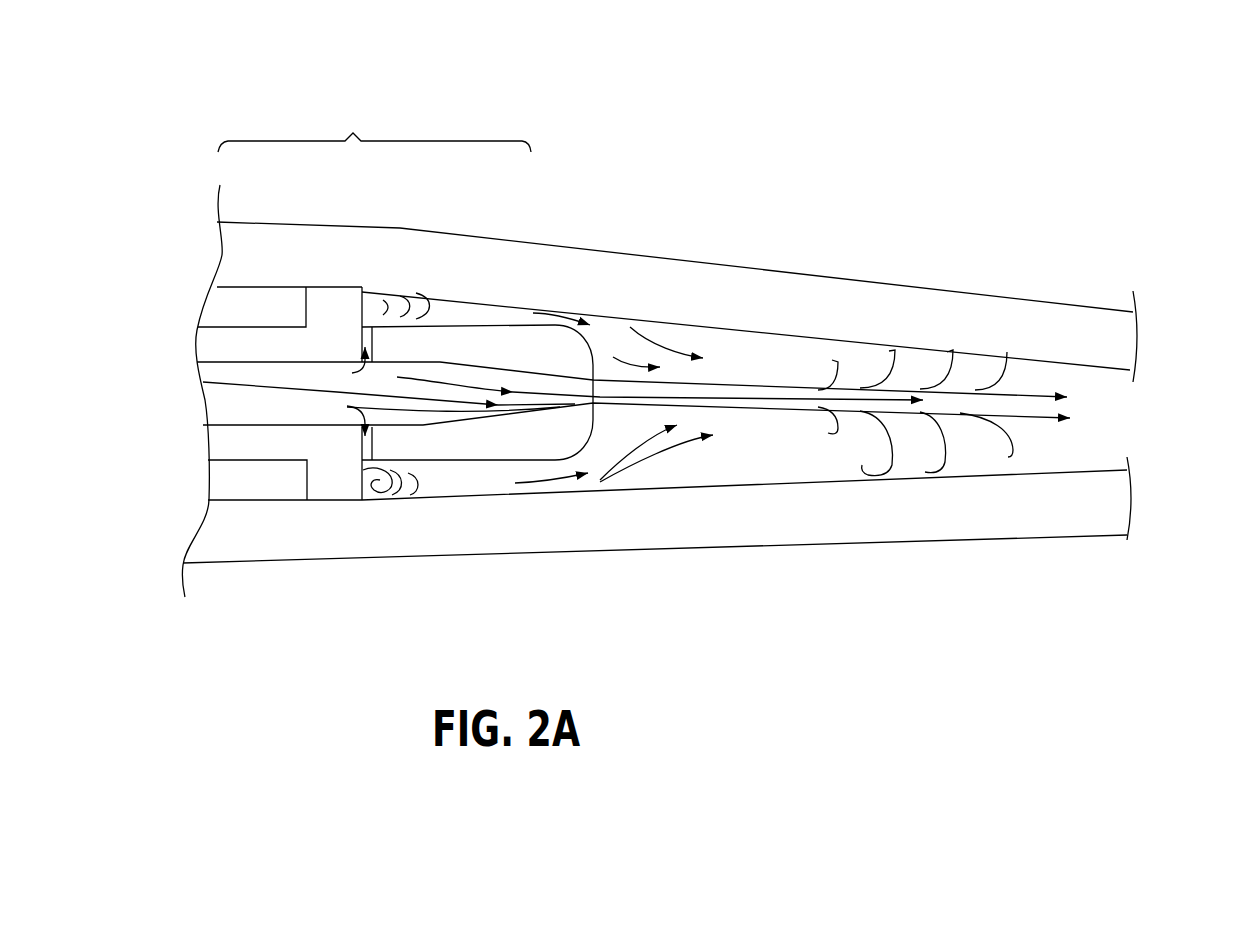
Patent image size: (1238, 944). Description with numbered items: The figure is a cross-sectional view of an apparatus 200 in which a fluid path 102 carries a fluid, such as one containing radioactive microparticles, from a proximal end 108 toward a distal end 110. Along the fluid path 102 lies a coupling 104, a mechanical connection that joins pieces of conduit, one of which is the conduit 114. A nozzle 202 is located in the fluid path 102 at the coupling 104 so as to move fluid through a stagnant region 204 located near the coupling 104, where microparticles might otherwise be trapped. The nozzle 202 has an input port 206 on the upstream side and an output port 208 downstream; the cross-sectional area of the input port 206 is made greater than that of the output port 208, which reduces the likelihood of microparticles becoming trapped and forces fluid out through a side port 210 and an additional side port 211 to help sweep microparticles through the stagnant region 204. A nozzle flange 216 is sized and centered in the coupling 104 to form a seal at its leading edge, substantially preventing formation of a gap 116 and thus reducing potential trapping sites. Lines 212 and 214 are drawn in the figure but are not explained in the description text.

The apparatus 200 is at (806, 117).
The coupling 104 is at (353, 133).
The fluid path 102 is at (203, 382).
The proximal end 108 is at (183, 547).
The distal end 110 is at (1133, 503).
The conduit 114 is at (970, 305).
The gap 116 is at (326, 287).
The nozzle 202 is at (548, 348).
The stagnant region 204 is at (557, 483).
The input port 206 is at (372, 400).
The output port 208 is at (614, 357).
The side port 210 is at (385, 478).
The side port 211 is at (362, 332).
The downstream vortices 212 is at (905, 397).
The converging channel walls 214 is at (452, 368).
The nozzle flange 216 is at (381, 291).